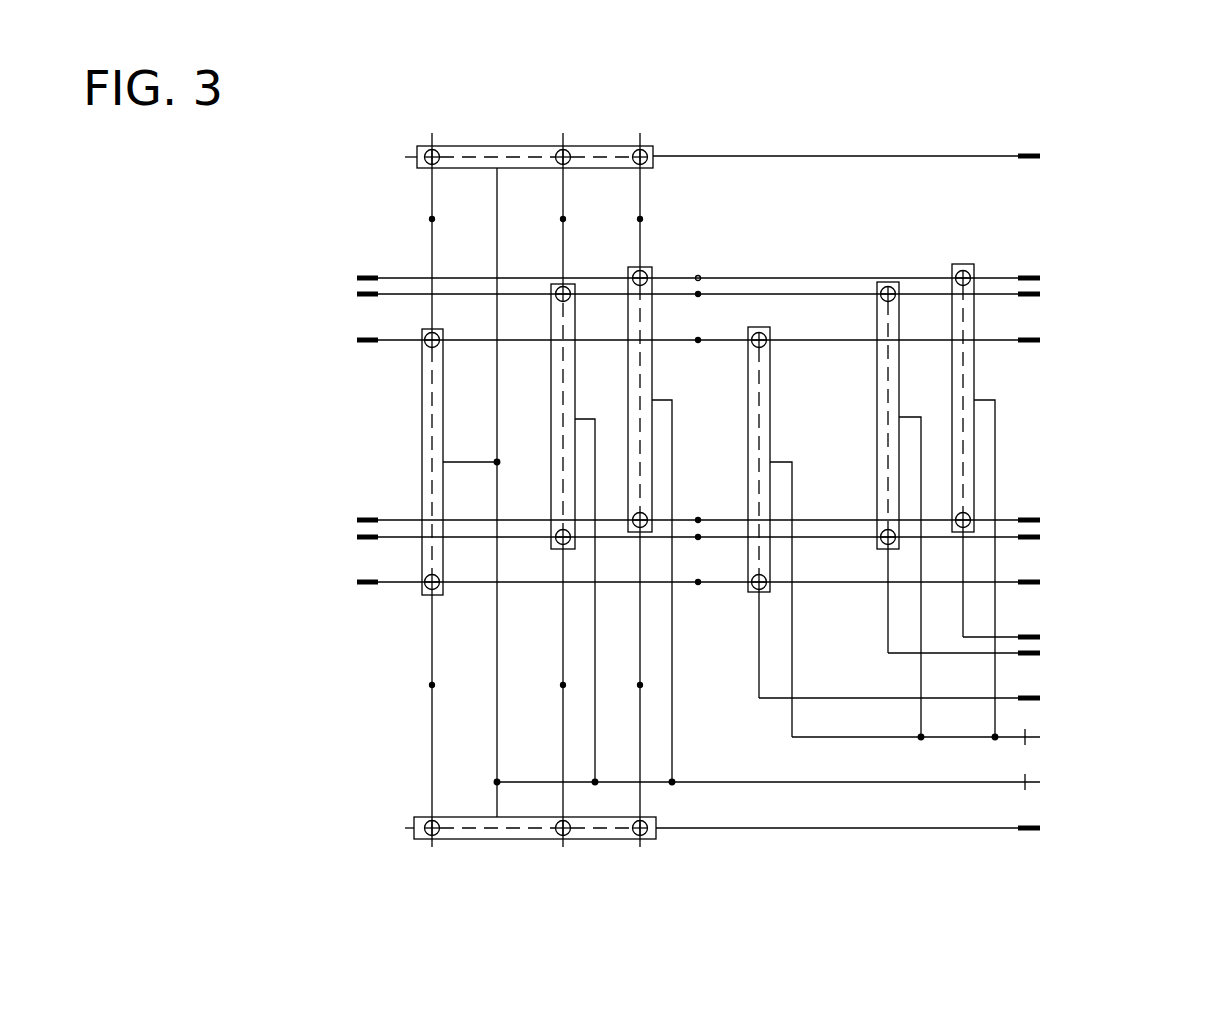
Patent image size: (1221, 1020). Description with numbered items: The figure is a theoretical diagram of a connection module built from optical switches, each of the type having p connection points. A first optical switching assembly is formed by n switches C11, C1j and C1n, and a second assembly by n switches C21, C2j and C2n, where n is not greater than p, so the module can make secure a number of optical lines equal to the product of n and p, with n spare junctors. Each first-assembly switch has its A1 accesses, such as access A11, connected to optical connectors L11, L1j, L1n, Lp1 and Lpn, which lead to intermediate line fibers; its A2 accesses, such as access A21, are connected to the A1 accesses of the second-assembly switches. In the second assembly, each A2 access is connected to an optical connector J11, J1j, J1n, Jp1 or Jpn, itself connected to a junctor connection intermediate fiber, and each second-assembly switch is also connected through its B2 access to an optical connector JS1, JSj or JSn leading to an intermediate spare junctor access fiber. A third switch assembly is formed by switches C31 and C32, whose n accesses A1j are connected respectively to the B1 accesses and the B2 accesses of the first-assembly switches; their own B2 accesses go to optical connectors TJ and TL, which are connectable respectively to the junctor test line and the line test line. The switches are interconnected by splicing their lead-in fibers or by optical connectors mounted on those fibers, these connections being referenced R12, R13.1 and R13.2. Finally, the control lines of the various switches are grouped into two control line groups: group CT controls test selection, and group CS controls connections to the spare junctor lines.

The optical switch of the third switch assembly C31 is at (463, 150).
The optical switch of the third switch assembly C32 is at (478, 833).
The B1 access B1 is at (560, 262).
The B2 access B2 is at (668, 157).
The optical connector TJ is at (1045, 156).
The optical connector TL is at (1045, 828).
The A1j access A1j is at (560, 178).
The A1 access A11 is at (540, 293).
The A2 access A21 is at (592, 293).
The interconnection R13.1 is at (636, 216).
The interconnection R13.2 is at (636, 683).
The interconnection R12 is at (699, 580).
The optical connector L11 is at (355, 278).
The optical connector L1j is at (355, 295).
The optical connector L1n is at (355, 340).
The optical connector Lp1 is at (355, 520).
The optical connector Lpn is at (355, 582).
The optical connector J11 is at (1045, 276).
The optical connector J1j is at (1045, 293).
The optical connector J1n is at (1045, 338).
The optical connector Jp1 is at (1045, 518).
The optical connector Jpn is at (1045, 580).
The optical connector JS1 is at (1045, 637).
The optical connector JSj is at (1045, 655).
The optical connector JSn is at (1045, 695).
The control line group CS is at (1045, 740).
The control line group CT is at (1045, 782).
The optical switch of the first switch assembly C1n is at (422, 460).
The optical switch of the first switch assembly C1j is at (558, 452).
The optical switch of the first switch assembly C11 is at (647, 393).
The optical switch of the second switch assembly C2n is at (768, 385).
The optical switch of the second switch assembly C2j is at (878, 428).
The optical switch of the second switch assembly C21 is at (970, 392).